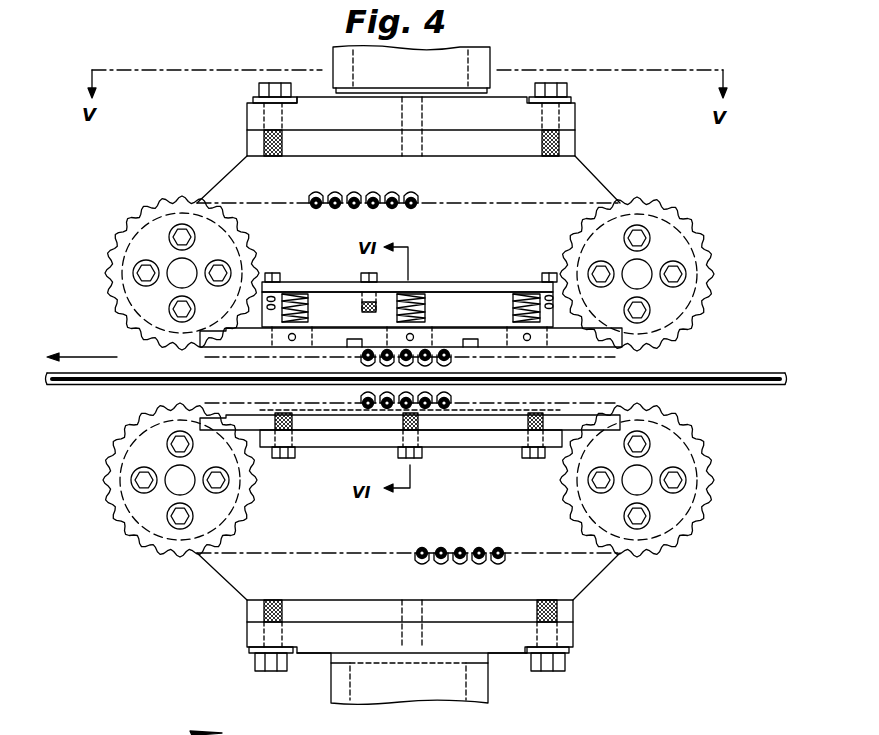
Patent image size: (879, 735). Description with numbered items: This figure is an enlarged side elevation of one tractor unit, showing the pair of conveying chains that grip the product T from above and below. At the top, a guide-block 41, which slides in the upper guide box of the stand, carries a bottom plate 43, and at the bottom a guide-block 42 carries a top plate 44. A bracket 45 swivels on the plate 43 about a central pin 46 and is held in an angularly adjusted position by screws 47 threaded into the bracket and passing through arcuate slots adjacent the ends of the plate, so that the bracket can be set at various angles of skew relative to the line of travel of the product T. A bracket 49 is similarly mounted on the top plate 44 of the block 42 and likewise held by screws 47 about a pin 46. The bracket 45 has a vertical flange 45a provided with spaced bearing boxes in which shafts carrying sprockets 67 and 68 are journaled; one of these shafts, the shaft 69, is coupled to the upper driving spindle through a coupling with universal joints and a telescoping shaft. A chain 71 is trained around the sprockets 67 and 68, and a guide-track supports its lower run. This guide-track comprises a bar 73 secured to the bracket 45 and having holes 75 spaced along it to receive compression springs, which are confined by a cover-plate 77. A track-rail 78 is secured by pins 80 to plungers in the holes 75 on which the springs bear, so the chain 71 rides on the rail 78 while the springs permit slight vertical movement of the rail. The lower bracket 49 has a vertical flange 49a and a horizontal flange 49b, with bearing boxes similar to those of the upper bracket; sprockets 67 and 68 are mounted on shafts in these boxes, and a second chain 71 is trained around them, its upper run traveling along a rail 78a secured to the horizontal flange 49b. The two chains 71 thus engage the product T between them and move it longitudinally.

The guide-block 41 is at (333, 58).
The guide-block 42 is at (472, 704).
The bottom plate 43 is at (247, 118).
The top plate 44 is at (500, 654).
The bracket 45 is at (567, 132).
The vertical flange 45a is at (560, 181).
The central pin 46 is at (422, 112).
The screws 47 is at (258, 93).
The bracket 49 is at (573, 611).
The vertical flange 49a is at (575, 571).
The horizontal flange 49b is at (488, 440).
The sprocket 67 is at (120, 260).
The sprocket 68 is at (703, 262).
The shaft 69 is at (225, 731).
The chain 71 is at (412, 196).
The bar 73 is at (496, 300).
The holes 75 is at (430, 289).
The cover-plate 77 is at (458, 291).
The track-rail 78 is at (327, 340).
The rail 78a is at (349, 425).
The pins 80 is at (525, 334).
The product T is at (701, 375).